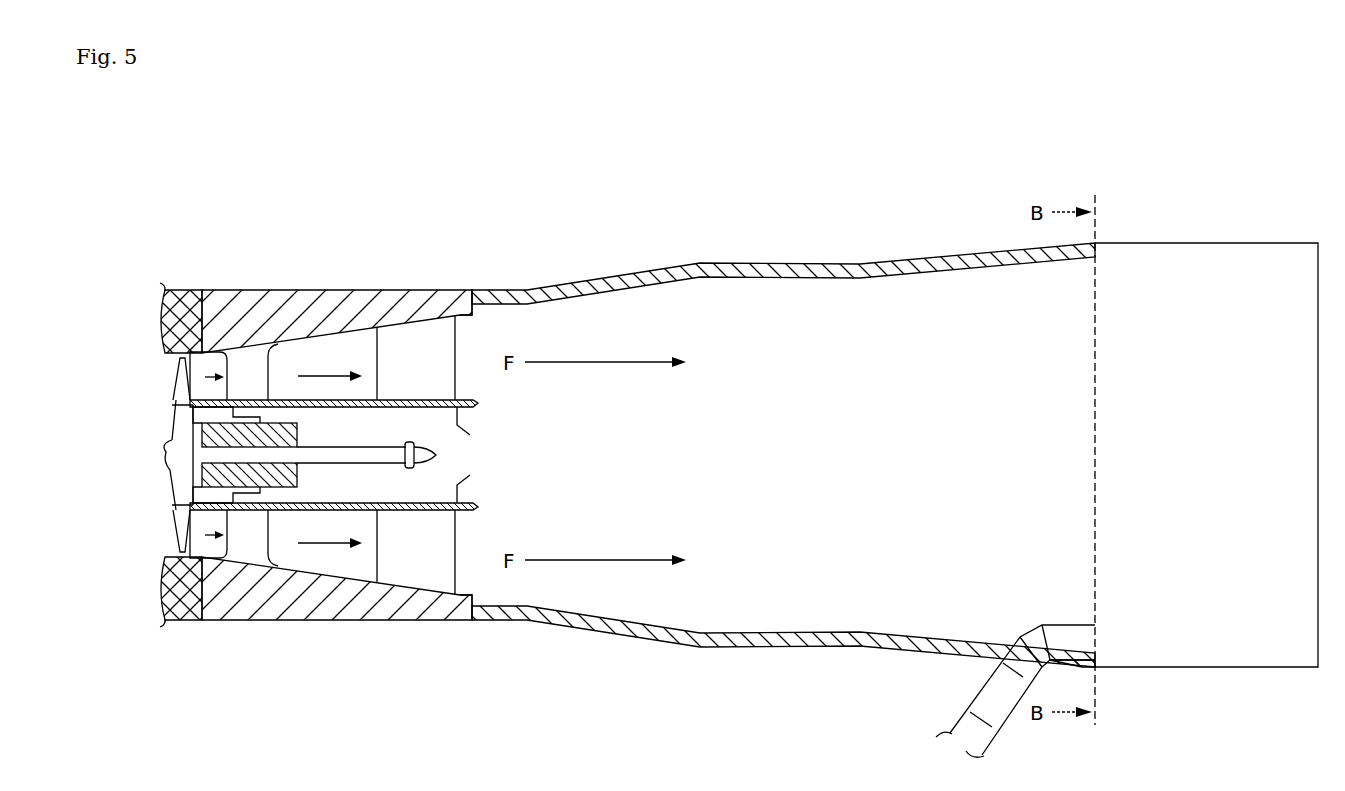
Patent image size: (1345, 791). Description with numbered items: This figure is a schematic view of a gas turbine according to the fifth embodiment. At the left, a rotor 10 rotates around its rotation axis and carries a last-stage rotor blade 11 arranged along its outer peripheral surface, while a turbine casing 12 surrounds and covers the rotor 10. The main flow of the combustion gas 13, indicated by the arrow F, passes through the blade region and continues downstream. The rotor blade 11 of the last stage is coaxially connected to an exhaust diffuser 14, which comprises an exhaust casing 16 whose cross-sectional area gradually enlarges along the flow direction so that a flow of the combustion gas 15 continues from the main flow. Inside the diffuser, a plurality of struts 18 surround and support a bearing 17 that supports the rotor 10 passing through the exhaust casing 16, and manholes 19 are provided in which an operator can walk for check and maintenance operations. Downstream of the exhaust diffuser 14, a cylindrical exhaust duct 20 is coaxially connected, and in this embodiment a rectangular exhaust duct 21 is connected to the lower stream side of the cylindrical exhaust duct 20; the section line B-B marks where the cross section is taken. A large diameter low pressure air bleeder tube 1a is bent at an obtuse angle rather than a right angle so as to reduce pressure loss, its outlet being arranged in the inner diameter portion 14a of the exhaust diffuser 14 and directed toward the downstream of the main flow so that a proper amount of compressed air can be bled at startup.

The large diameter low pressure air bleeder tube 1a is at (1063, 625).
The rotor 10 is at (176, 440).
The rotor blade 11 is at (178, 371).
The turbine casing 12 is at (185, 301).
The main flow of the combustion gas 13 is at (146, 372).
The exhaust diffuser 14 is at (334, 242).
The inner diameter portion of the exhaust diffuser 14a is at (442, 438).
The flow of the combustion gas 15 is at (354, 340).
The exhaust casing 16 is at (233, 291).
The bearing 17 is at (318, 431).
The strut 18 is at (260, 359).
The manhole 19 is at (444, 342).
The cylindrical exhaust duct 20 is at (799, 262).
The rectangular exhaust duct 21 is at (1210, 243).